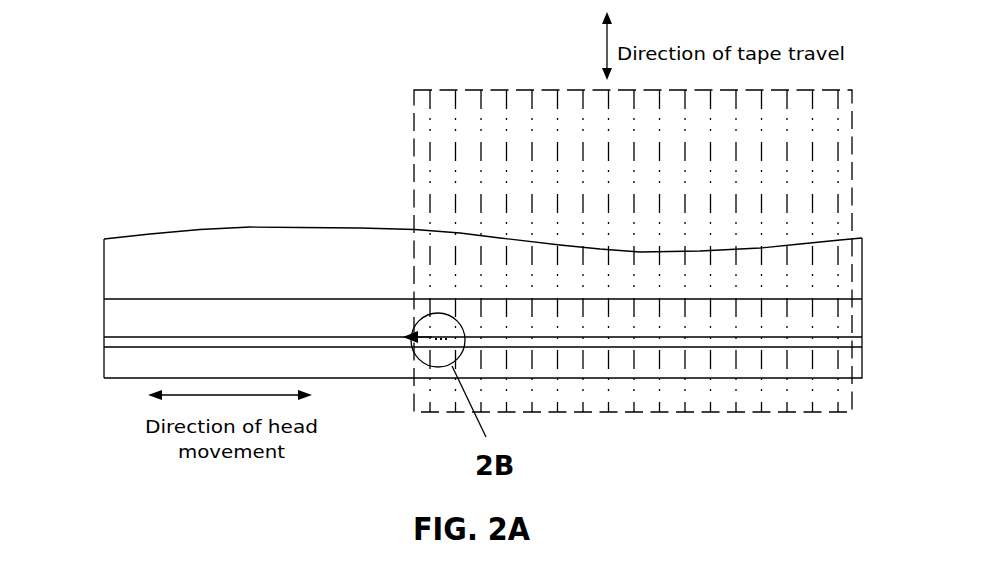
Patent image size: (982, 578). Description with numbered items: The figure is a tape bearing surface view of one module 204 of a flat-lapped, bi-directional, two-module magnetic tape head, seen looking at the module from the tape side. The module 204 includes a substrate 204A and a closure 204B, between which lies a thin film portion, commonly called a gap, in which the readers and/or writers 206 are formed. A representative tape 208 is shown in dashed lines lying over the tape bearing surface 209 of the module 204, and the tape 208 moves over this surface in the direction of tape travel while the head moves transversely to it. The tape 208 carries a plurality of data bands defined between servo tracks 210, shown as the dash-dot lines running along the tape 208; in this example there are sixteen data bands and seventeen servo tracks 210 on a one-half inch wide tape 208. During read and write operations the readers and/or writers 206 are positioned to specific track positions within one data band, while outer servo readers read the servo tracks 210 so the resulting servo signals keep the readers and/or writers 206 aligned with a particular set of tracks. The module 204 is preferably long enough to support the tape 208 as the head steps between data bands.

The module 204 is at (433, 261).
The substrate 204A is at (252, 228).
The closure 204B is at (104, 363).
The readers and/or writers 206 is at (405, 338).
The tape 208 is at (413, 91).
The tape bearing surface 209 is at (312, 322).
The servo tracks 210 is at (528, 180).